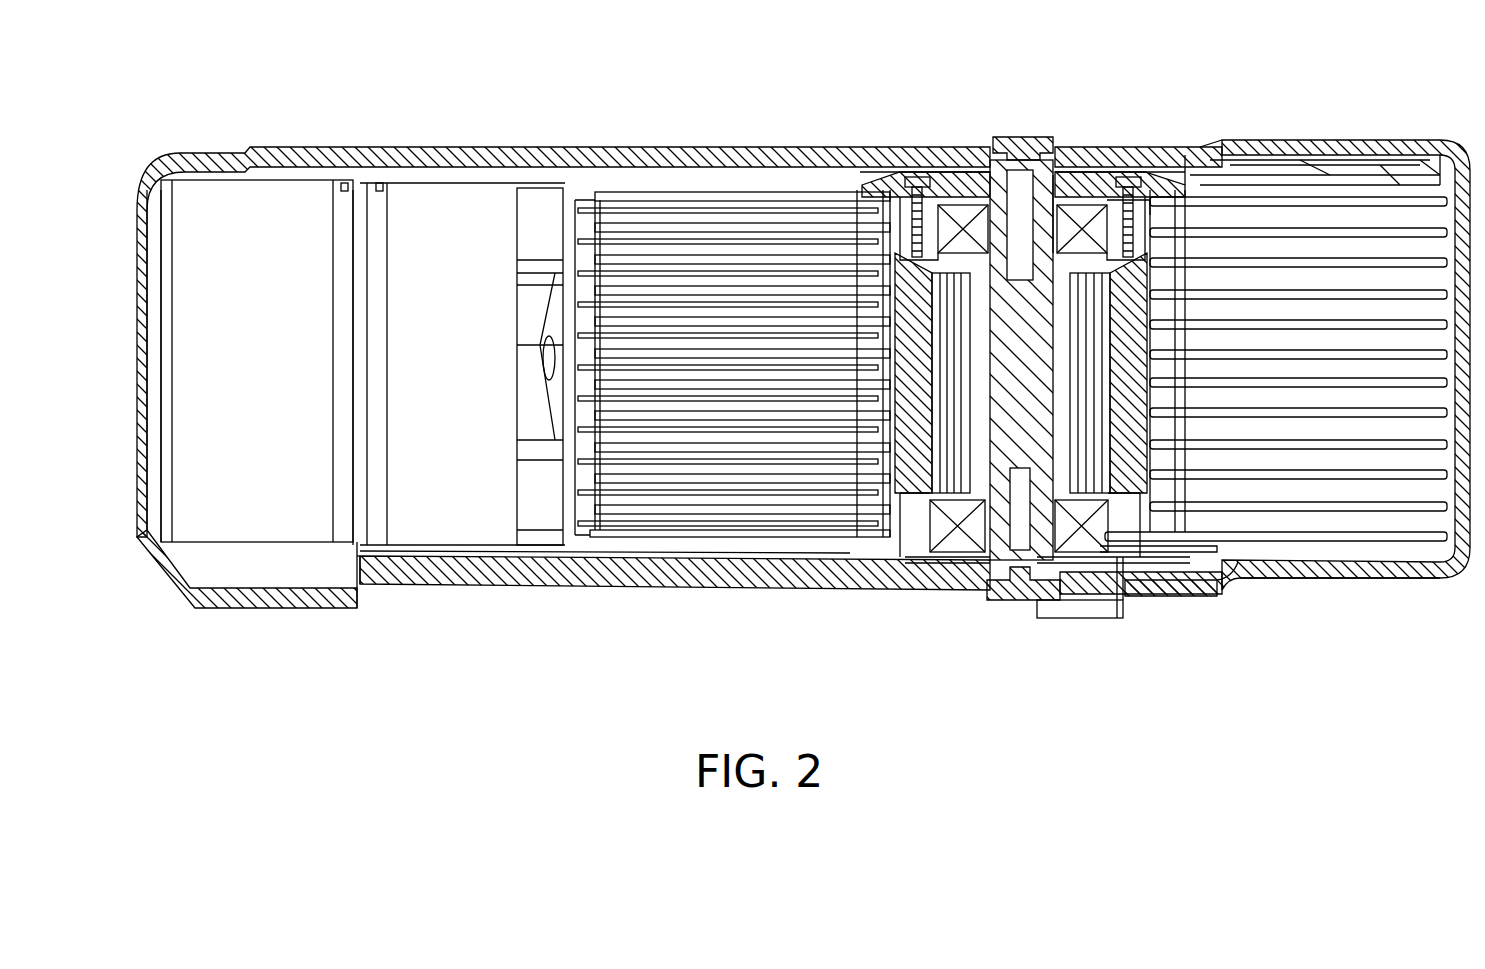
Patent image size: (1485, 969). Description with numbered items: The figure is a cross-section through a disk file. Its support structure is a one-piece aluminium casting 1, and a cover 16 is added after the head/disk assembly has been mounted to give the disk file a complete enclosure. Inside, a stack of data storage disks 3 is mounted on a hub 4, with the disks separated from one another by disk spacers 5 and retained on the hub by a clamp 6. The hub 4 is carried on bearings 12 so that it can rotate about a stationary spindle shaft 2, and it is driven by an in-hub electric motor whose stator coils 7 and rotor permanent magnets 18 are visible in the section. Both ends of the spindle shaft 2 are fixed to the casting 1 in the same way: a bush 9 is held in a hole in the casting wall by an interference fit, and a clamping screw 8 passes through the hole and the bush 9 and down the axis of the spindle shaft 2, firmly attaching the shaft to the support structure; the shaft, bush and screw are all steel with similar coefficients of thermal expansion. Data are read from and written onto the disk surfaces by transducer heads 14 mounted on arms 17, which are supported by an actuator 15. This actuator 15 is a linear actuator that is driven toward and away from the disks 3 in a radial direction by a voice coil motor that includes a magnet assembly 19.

The one-piece aluminium casting 1 is at (520, 150).
The spindle shaft 2 is at (1003, 297).
The data storage disks 3 is at (750, 195).
The hub 4 is at (1137, 483).
The disk spacers 5 is at (1173, 217).
The clamp 6 is at (945, 180).
The stator coils 7 is at (962, 530).
The clamping screw 8 is at (1040, 150).
The bush 9 is at (1087, 213).
The bearings 12 is at (1110, 213).
The transducer heads 14 is at (650, 200).
The actuator 15 is at (317, 173).
The cover 16 is at (1305, 582).
The arms 17 is at (580, 205).
The rotor permanent magnets 18 is at (913, 483).
The magnet assembly 19 is at (283, 520).